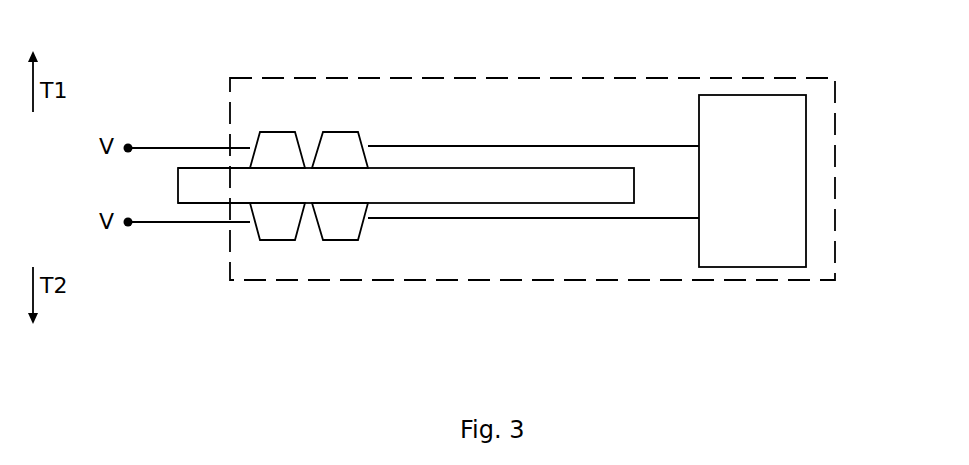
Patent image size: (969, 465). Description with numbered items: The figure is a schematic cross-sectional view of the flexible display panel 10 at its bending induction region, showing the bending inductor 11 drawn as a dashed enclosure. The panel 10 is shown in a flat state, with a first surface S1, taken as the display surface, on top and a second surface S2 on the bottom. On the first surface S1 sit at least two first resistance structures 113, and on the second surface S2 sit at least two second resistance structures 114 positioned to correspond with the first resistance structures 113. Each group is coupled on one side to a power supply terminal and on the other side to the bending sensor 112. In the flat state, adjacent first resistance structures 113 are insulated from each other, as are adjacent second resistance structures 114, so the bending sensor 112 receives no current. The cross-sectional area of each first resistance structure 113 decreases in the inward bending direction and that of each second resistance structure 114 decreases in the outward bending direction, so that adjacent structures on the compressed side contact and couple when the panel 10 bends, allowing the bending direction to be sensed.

The flexible display panel 10 is at (192, 185).
The bending inductor 11 is at (835, 243).
The bending sensor 112 is at (806, 131).
The first resistance structures 113 is at (338, 132).
The second resistance structures 114 is at (340, 241).
The first surface S1 is at (208, 168).
The second surface S2 is at (208, 203).